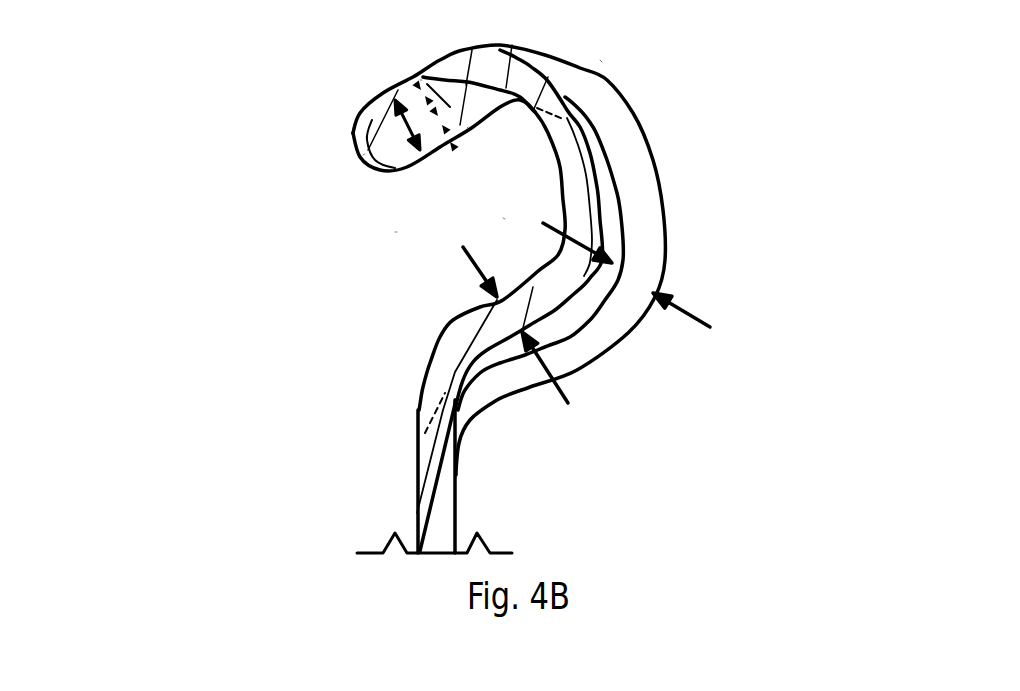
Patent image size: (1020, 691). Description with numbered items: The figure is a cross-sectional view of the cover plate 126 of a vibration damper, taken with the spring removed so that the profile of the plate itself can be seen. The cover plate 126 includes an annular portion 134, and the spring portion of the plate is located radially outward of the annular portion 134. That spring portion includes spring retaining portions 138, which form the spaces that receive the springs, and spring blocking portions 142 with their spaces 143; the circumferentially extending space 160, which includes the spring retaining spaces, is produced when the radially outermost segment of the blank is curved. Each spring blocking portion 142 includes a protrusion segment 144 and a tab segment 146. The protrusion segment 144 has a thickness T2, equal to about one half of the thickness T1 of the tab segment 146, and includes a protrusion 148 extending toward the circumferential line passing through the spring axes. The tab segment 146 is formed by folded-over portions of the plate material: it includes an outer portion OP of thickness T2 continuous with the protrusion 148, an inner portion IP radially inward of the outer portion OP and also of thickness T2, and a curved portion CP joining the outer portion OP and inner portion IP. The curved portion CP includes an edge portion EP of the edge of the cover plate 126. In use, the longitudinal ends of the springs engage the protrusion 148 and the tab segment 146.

The cover plate 126 is at (610, 53).
The annular portion 134 is at (462, 512).
The spring retaining portions 138 is at (663, 173).
The spring blocking portions 142 is at (653, 110).
The spaces 143 is at (503, 218).
The protrusion segment 144 is at (610, 217).
The tab segment 146 is at (440, 53).
The protrusion 148 is at (587, 190).
The circumferentially extending space 160 is at (390, 232).
The thickness T1 is at (366, 160).
The thickness T2 is at (687, 320).
The inner portion IP is at (467, 130).
The outer portion OP is at (420, 80).
The curved portion CP is at (353, 128).
The edge portion EP is at (363, 155).